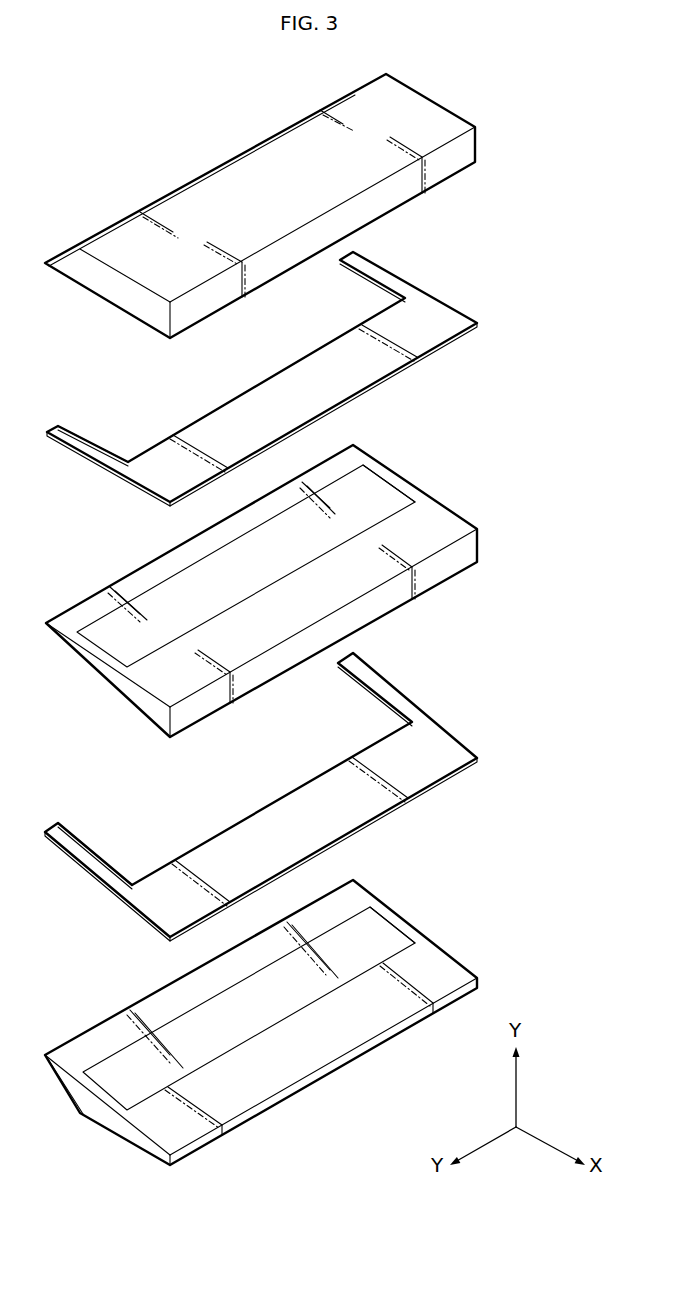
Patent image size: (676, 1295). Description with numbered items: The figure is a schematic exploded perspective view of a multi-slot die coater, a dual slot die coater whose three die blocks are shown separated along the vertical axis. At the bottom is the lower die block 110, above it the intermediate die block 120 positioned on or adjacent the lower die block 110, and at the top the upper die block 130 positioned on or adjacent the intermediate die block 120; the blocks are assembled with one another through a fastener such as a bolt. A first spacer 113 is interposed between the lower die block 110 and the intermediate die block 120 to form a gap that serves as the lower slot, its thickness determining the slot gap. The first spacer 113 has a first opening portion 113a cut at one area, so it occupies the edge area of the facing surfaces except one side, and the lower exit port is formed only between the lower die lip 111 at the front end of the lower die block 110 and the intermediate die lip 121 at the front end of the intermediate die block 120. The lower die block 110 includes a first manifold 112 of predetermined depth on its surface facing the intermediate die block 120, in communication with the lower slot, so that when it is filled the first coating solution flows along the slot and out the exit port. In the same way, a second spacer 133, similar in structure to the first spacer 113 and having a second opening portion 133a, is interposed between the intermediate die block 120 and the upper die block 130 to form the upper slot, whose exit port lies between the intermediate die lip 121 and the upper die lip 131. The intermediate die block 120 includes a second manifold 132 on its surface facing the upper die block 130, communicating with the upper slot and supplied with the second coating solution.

The lower die block 110 is at (299, 1014).
The lower die lip 111 is at (108, 1027).
The first manifold 112 is at (373, 936).
The first spacer 113 is at (254, 797).
The first opening portion 113a is at (145, 823).
The intermediate die block 120 is at (299, 579).
The intermediate die lip 121 is at (125, 575).
The upper die block 130 is at (299, 206).
The upper die lip 131 is at (104, 231).
The second manifold 132 is at (368, 496).
The second spacer 133 is at (255, 379).
The second opening portion 133a is at (135, 414).